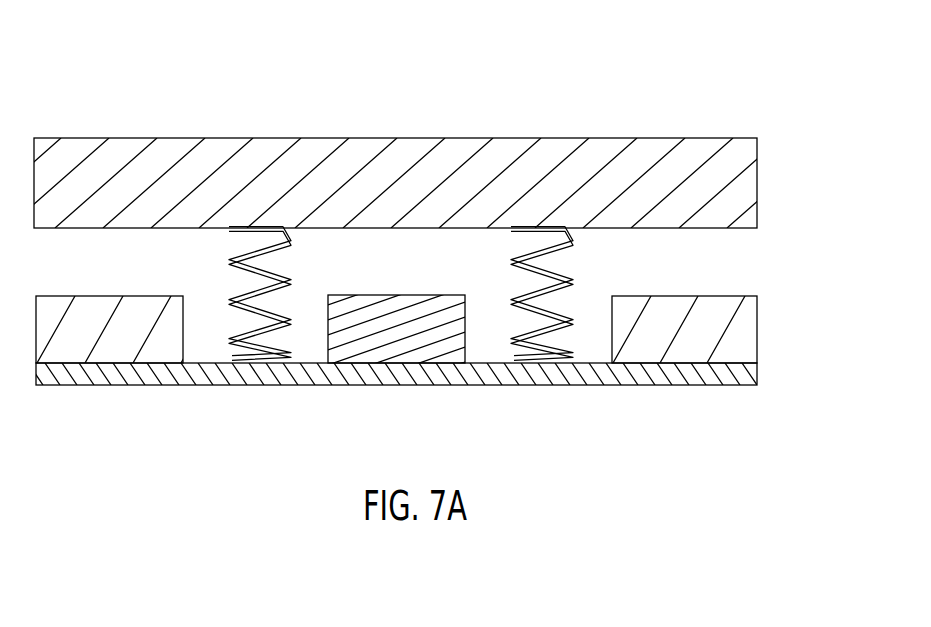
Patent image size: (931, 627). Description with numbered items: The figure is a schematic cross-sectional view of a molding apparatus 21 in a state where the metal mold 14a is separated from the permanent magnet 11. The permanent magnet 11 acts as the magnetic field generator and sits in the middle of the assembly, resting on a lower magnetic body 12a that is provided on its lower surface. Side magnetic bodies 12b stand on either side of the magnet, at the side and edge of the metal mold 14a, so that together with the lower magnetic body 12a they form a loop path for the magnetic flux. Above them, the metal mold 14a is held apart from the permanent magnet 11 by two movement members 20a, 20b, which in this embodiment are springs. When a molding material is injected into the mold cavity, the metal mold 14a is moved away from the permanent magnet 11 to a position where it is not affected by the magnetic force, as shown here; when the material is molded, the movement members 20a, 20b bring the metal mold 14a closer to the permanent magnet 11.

The molding apparatus 21 is at (138, 95).
The metal mold 14a is at (726, 180).
The side magnetic body 12b is at (730, 325).
The lower magnetic body 12a is at (733, 372).
The permanent magnet 11 is at (388, 337).
The movement member 20a is at (270, 335).
The movement member 20b is at (545, 335).